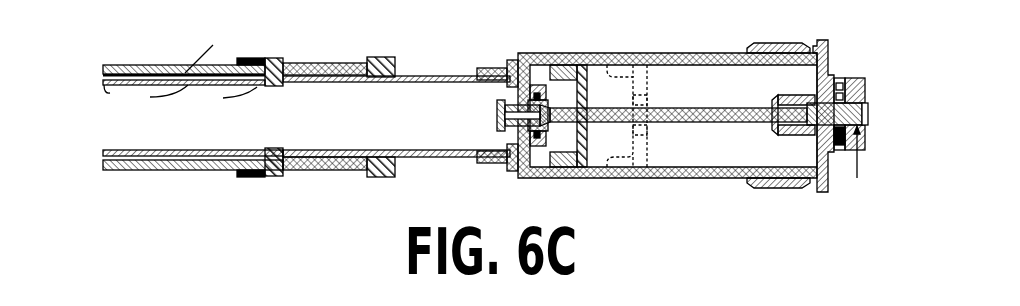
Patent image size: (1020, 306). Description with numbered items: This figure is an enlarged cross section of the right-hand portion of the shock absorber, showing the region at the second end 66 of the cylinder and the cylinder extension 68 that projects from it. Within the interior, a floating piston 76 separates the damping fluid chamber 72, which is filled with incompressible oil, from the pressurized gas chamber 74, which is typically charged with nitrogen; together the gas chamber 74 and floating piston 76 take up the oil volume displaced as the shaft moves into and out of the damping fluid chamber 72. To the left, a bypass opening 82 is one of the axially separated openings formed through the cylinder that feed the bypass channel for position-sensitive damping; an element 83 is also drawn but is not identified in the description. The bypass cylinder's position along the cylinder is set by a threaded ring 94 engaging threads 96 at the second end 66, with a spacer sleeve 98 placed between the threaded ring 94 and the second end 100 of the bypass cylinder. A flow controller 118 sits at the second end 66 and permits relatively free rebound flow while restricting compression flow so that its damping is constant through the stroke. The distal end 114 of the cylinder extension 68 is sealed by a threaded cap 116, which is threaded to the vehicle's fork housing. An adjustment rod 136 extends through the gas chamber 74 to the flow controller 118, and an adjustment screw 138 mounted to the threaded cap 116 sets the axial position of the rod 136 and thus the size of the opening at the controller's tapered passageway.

The second end 66 is at (443, 76).
The cylinder extension 68 is at (615, 47).
The damping fluid chamber 72 is at (352, 131).
The pressurized gas chamber 74 is at (741, 96).
The floating piston 76 is at (600, 157).
The bypass opening 82 is at (258, 86).
The inner wire 83 is at (189, 85).
The threaded ring 94 is at (379, 57).
The threads 96 is at (424, 158).
The spacer sleeve 98 is at (316, 172).
The second end 100 is at (252, 58).
The distal end 114 is at (787, 178).
The threaded cap 116 is at (823, 43).
The flow controller 118 is at (490, 115).
The adjustment rod 136 is at (673, 107).
The adjustment screw 138 is at (870, 112).